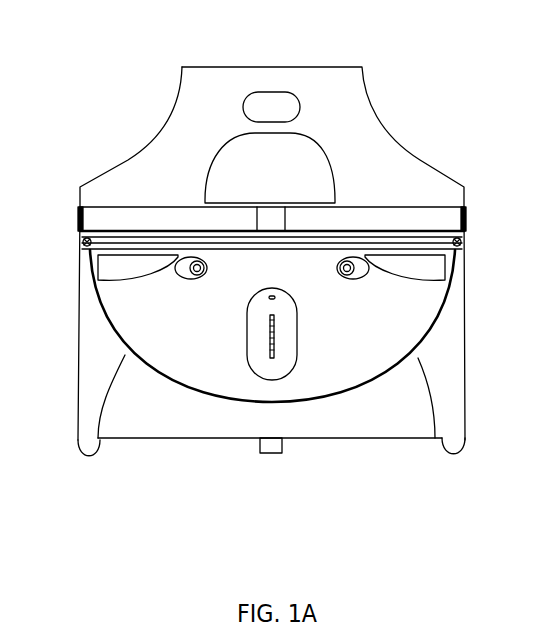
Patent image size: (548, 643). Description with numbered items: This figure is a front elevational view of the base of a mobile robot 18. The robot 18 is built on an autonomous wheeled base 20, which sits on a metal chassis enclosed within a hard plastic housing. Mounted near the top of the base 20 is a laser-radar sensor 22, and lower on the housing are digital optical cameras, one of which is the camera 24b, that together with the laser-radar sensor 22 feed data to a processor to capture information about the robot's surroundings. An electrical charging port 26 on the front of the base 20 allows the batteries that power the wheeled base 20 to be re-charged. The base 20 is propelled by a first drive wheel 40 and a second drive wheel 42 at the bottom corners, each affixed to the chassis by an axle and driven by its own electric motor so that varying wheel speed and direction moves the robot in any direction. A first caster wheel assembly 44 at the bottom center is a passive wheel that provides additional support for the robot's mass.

The robot 18 is at (461, 65).
The autonomous wheeled base 20 is at (193, 339).
The laser-radar sensor 22 is at (287, 218).
The digital optical camera 24b is at (177, 279).
The electrical charging port 26 is at (287, 349).
The first drive wheel 40 is at (84, 457).
The second drive wheel 42 is at (460, 448).
The first caster wheel assembly 44 is at (266, 463).